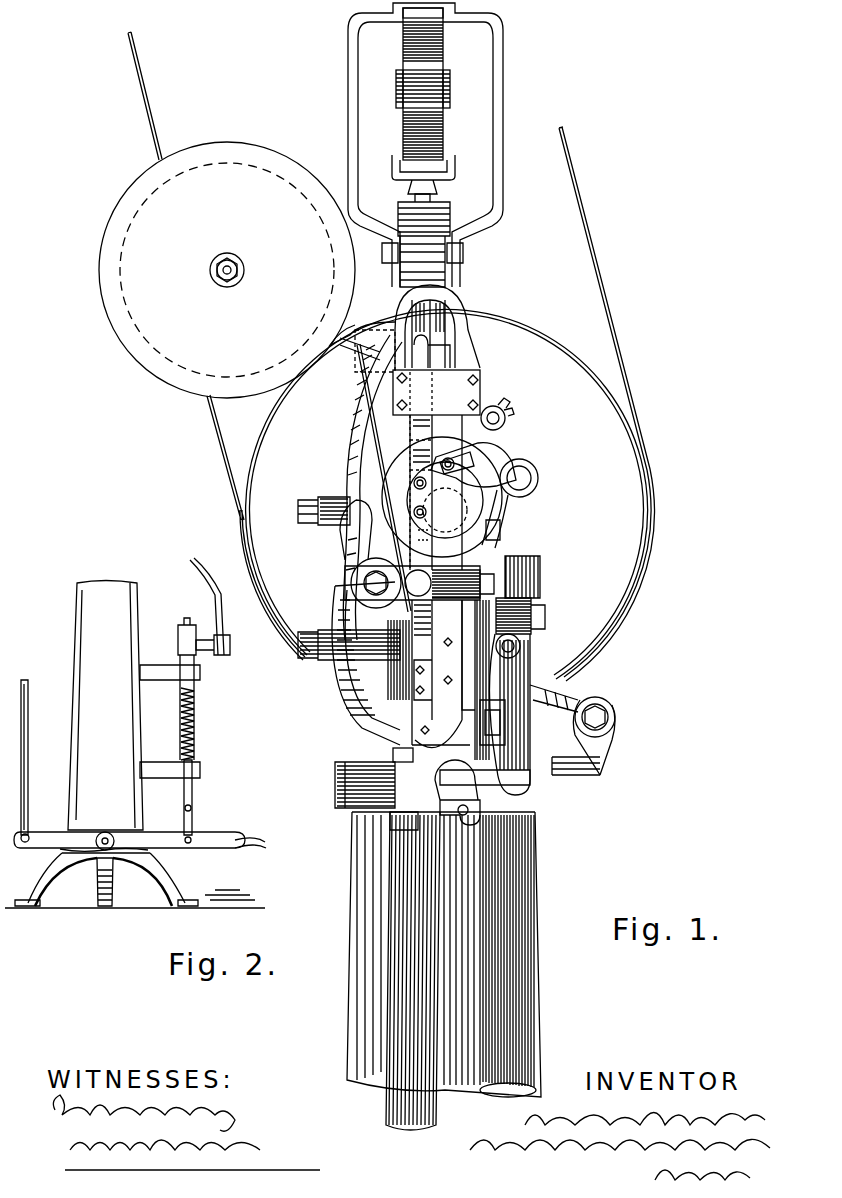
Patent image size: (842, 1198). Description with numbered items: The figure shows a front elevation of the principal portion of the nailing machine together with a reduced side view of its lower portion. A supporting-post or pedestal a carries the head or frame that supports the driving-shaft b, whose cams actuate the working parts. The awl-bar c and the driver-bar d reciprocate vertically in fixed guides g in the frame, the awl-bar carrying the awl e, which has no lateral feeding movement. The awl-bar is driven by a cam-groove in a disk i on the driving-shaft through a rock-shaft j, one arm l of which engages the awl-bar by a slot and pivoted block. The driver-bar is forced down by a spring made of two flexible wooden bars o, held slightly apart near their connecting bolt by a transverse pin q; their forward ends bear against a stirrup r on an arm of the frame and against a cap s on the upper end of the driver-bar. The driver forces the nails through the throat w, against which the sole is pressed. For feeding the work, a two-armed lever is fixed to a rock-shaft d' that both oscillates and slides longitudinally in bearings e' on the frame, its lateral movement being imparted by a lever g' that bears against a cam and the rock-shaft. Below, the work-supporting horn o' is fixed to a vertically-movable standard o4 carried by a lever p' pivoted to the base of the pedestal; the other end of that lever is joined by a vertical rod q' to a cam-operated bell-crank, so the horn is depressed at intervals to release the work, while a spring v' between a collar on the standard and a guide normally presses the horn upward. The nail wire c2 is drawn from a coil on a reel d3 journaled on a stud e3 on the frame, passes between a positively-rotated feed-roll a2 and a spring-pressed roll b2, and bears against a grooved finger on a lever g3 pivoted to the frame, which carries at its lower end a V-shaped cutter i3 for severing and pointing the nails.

In FIG. 1, the stirrup r is at (496, 148).
In FIG. 1, the flexible wooden bars o is at (435, 84).
In FIG. 1, the transverse pin q is at (435, 89).
In FIG. 1, the cap s is at (446, 181).
In FIG. 1, the reel d3 is at (227, 270).
In FIG. 1, the stud e3 is at (235, 272).
In FIG. 1, the wire c2 is at (360, 385).
In FIG. 1, the fixed guides g is at (453, 400).
In FIG. 1, the awl-bar c is at (447, 492).
In FIG. 1, the driver-bar d is at (368, 525).
In FIG. 1, the disk i is at (478, 444).
In FIG. 1, the driving-shaft b is at (468, 505).
In FIG. 1, the arm l is at (473, 465).
In FIG. 1, the rock-shaft j is at (538, 478).
In FIG. 1, the spring-pressed roll b2 is at (430, 560).
In FIG. 1, the positively-rotated feed-roll a2 is at (352, 583).
In FIG. 1, the lever g' is at (552, 710).
In FIG. 1, the lever g3 is at (365, 737).
In FIG. 1, the V-shaped cutter i3 is at (403, 753).
In FIG. 1, the bearings e' is at (365, 785).
In FIG. 1, the awl e is at (470, 762).
In FIG. 1, the rock-shaft d' is at (509, 783).
In FIG. 1, the throat w is at (388, 806).
In FIG. 1, the supporting-post a is at (520, 890).
In FIG. 2, the supporting-post a is at (105, 706).
In FIG. 1, the work-supporting horn o' is at (384, 971).
In FIG. 2, the work-supporting horn o' is at (217, 606).
In FIG. 2, the lever p' is at (140, 827).
In FIG. 2, the vertical rod q' is at (37, 761).
In FIG. 2, the spring v' is at (206, 689).
In FIG. 2, the vertically-movable standard o4 is at (193, 790).